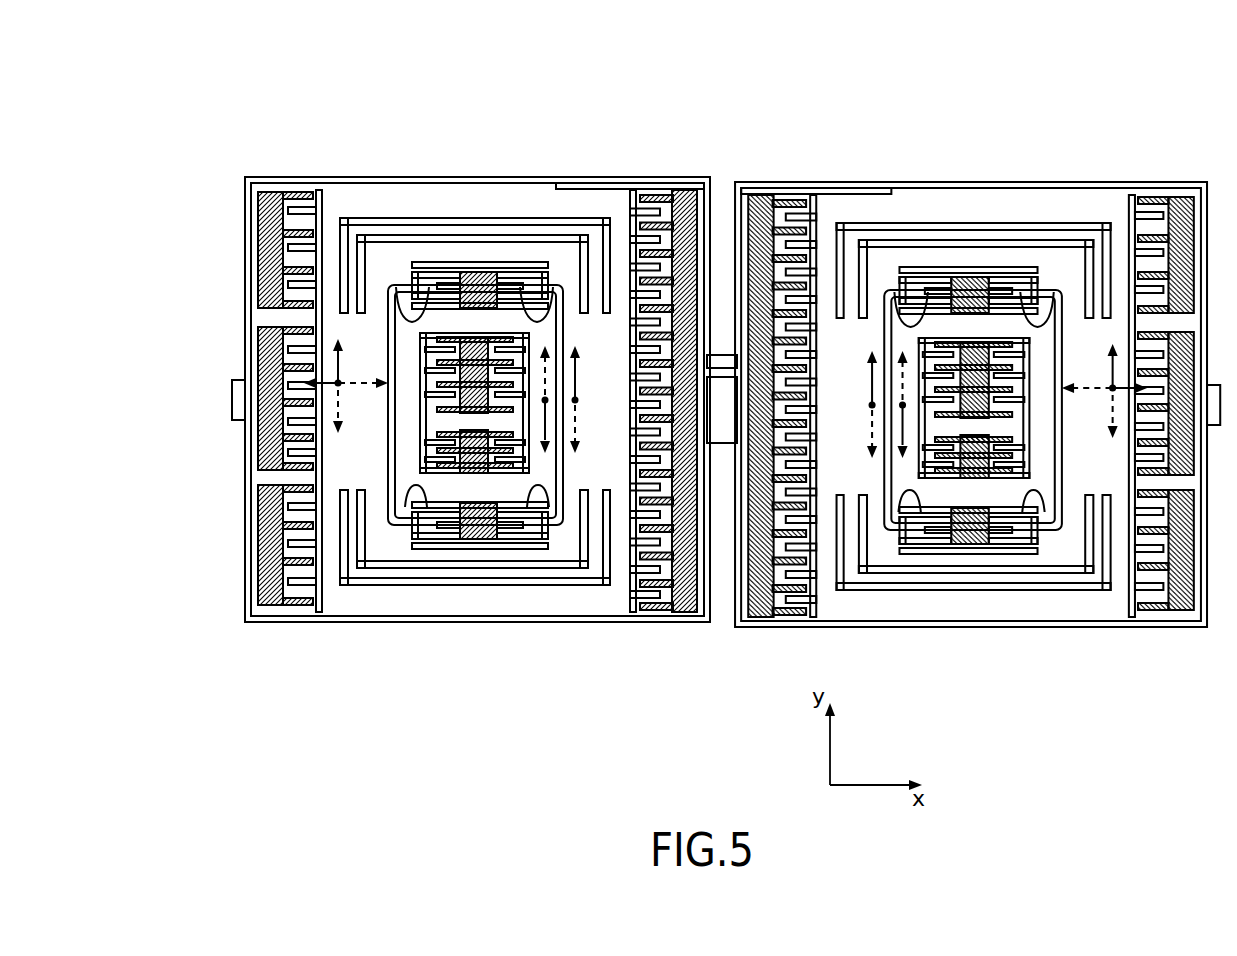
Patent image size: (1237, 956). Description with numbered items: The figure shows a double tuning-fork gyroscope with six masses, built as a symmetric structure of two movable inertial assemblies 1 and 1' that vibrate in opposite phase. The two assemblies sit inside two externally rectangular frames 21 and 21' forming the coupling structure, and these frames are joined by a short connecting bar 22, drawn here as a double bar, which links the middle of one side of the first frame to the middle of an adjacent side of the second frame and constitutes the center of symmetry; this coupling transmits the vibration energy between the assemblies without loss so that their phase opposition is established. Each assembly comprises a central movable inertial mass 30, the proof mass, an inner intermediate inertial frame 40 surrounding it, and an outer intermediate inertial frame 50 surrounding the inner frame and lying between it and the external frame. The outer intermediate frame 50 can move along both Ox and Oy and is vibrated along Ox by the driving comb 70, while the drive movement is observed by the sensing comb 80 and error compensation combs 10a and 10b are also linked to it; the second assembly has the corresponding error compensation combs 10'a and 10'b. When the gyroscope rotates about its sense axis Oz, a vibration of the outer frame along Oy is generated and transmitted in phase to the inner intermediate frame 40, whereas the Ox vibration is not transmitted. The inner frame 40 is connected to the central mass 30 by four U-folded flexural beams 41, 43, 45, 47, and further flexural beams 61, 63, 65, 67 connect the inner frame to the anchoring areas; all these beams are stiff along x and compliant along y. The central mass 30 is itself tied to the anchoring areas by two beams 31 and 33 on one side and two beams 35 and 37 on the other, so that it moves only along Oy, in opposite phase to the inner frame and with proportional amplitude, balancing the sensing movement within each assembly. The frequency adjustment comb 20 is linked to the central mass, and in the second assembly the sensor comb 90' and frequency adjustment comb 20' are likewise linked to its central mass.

The movable inertial assembly 1 is at (602, 120).
The movable inertial assembly 1' is at (977, 350).
The error compensation comb 10a is at (302, 192).
The error compensation comb 10b is at (272, 612).
The error compensation comb 10'a is at (1176, 205).
The error compensation comb 10'b is at (1162, 609).
The frequency adjustment comb 20 is at (512, 475).
The frequency adjustment comb 20' is at (968, 595).
The external frame 21 is at (590, 190).
The external frame 21' is at (816, 165).
The connecting bar 22 is at (720, 437).
The central movable inertial mass 30 is at (400, 335).
The beam 31 is at (537, 300).
The beam 33 is at (406, 296).
The beam 35 is at (538, 506).
The beam 37 is at (411, 506).
The inner intermediate inertial frame 40 is at (402, 235).
The flexural beam 41 is at (612, 190).
The flexural beam 43 is at (455, 268).
The flexural beam 45 is at (532, 545).
The flexural beam 47 is at (430, 540).
The outer intermediate inertial frame 50 is at (362, 196).
The flexural beam 61 is at (505, 265).
The flexural beam 63 is at (443, 270).
The flexural beam 65 is at (507, 540).
The flexural beam 67 is at (447, 540).
The driving comb 70 is at (300, 360).
The drive movement sensing comb 80 is at (655, 612).
The sensor comb 90' is at (974, 283).